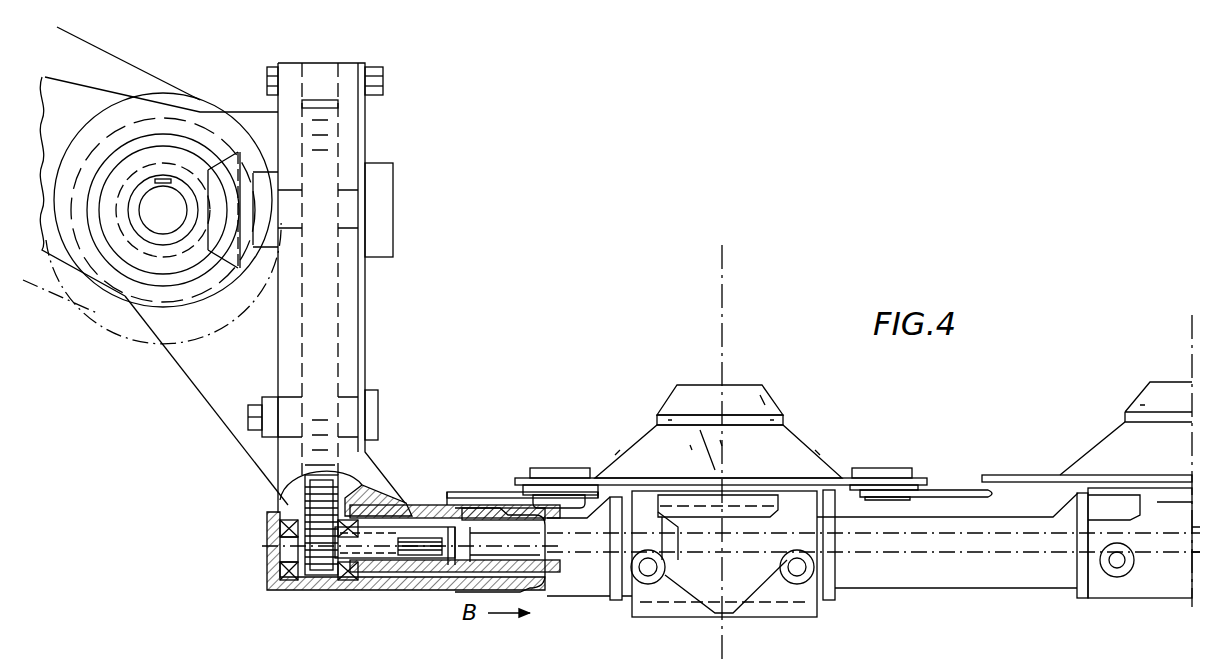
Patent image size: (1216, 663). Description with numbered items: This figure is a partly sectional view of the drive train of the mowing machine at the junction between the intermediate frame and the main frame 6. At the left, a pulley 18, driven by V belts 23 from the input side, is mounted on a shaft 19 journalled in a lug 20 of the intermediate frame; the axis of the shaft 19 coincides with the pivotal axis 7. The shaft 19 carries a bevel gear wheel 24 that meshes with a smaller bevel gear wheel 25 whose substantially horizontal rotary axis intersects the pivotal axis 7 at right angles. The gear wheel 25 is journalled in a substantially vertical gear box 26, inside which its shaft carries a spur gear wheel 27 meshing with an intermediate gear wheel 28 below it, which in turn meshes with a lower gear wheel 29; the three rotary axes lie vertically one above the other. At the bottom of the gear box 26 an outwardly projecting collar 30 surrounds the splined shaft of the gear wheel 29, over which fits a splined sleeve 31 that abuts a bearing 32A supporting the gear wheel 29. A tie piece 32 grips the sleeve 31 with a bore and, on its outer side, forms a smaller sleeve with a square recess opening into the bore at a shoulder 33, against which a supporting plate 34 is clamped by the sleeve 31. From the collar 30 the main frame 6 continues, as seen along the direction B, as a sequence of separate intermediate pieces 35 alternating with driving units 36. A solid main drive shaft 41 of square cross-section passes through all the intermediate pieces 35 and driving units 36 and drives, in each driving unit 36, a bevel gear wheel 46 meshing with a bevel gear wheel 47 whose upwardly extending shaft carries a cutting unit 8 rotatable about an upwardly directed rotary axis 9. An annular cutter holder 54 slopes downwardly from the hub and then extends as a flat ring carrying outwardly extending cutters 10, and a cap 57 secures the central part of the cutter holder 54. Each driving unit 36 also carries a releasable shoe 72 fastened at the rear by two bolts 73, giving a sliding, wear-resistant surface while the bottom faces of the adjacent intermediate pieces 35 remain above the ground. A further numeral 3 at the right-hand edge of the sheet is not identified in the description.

The shaft 3 is at (1201, 540).
The main frame 6 is at (1032, 522).
The pivotal axis 7 is at (172, 213).
The cutting unit 8 is at (902, 452).
The rotary axis 9 is at (722, 297).
The cutter 10 is at (478, 480).
The pulley 18 is at (205, 108).
The shaft 19 is at (145, 213).
The lug 20 is at (118, 294).
The V belt 23 is at (87, 42).
The bevel gear wheel 24 is at (150, 134).
The bevel gear wheel 25 is at (228, 263).
The gear box 26 is at (358, 368).
The gear wheel 27 is at (333, 141).
The intermediate gear wheel 28 is at (305, 493).
The gear wheel 29 is at (318, 580).
The collar 30 is at (412, 503).
The sleeve 31 is at (443, 498).
The tie piece 32 is at (412, 575).
The bearing 32A is at (356, 583).
The shoulder 33 is at (480, 563).
The supporting plate 34 is at (468, 522).
The intermediate piece 35 is at (550, 592).
The driving unit 36 is at (826, 606).
The main drive shaft 41 is at (910, 553).
The bevel gear wheel 46 is at (666, 568).
The bevel gear wheel 47 is at (770, 515).
The cutter holder 54 is at (800, 437).
The cap 57 is at (762, 392).
The shoe 72 is at (645, 617).
The bolt 73 is at (650, 582).